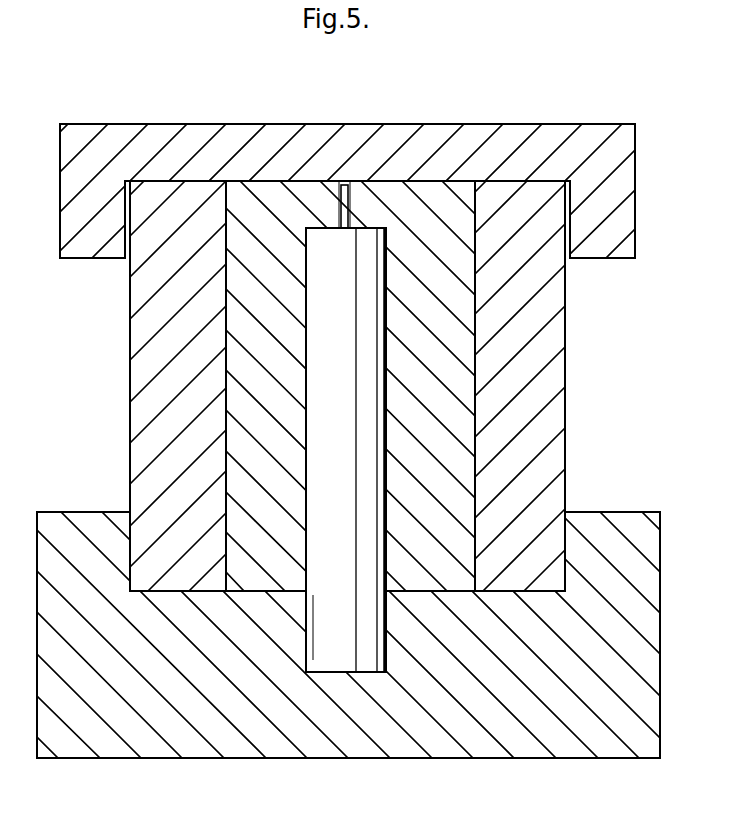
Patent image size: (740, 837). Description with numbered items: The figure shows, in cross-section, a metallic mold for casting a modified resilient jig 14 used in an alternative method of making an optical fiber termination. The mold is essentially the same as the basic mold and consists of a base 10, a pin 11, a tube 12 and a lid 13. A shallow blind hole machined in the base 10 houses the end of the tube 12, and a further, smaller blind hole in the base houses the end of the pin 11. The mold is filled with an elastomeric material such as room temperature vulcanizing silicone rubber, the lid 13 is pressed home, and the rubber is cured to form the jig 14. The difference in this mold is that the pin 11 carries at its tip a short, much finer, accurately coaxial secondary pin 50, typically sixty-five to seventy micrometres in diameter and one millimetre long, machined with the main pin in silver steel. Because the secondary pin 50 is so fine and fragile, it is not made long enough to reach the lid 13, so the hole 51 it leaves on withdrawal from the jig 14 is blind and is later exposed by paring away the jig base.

The base 10 is at (407, 745).
The tube 12 is at (143, 362).
The lid 13 is at (447, 140).
The jig 14 is at (242, 401).
The pin 11 is at (357, 472).
The secondary pin 50 is at (347, 185).
The hole 51 is at (348, 207).